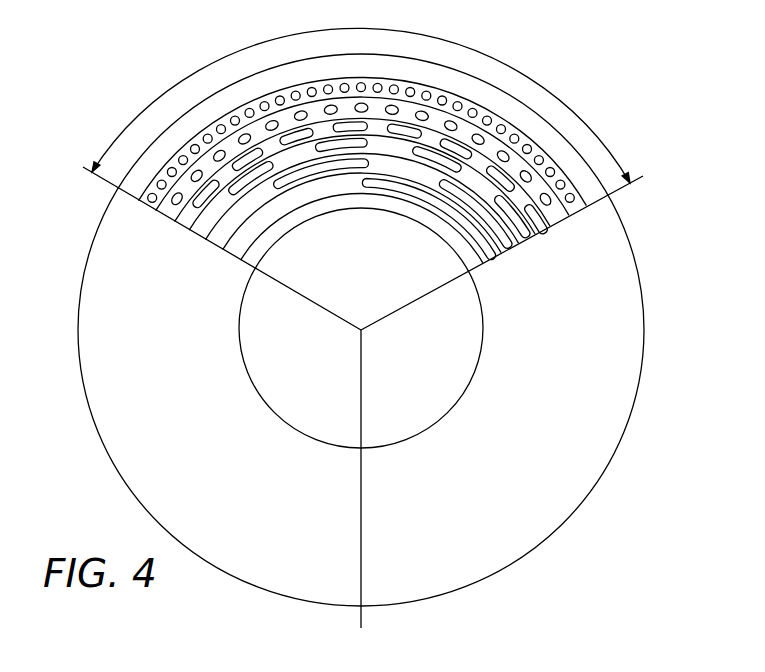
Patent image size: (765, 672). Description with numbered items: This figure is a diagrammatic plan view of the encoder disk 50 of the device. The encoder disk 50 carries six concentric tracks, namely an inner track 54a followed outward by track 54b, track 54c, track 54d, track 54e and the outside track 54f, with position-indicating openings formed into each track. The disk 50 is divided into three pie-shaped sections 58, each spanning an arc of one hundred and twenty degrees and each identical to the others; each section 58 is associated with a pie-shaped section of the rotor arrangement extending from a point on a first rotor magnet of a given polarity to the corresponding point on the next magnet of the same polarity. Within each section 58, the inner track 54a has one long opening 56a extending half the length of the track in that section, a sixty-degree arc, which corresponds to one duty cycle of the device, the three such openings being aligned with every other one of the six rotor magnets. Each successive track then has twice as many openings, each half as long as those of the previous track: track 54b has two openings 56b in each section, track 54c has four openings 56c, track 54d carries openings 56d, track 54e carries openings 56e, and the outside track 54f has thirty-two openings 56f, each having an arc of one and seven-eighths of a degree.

The encoder disk 50 is at (134, 73).
The pie shaped section 58 is at (257, 42).
The inner track 54a is at (508, 277).
The track 54b is at (528, 273).
The track 54c is at (545, 264).
The track 54d is at (562, 257).
The track 54e is at (583, 249).
The track 54f is at (599, 238).
The long opening 56a is at (478, 236).
The opening 56b is at (313, 170).
The opening 56c is at (245, 184).
The opening 56d is at (415, 130).
The opening 56e is at (472, 130).
The opening 56f is at (517, 135).